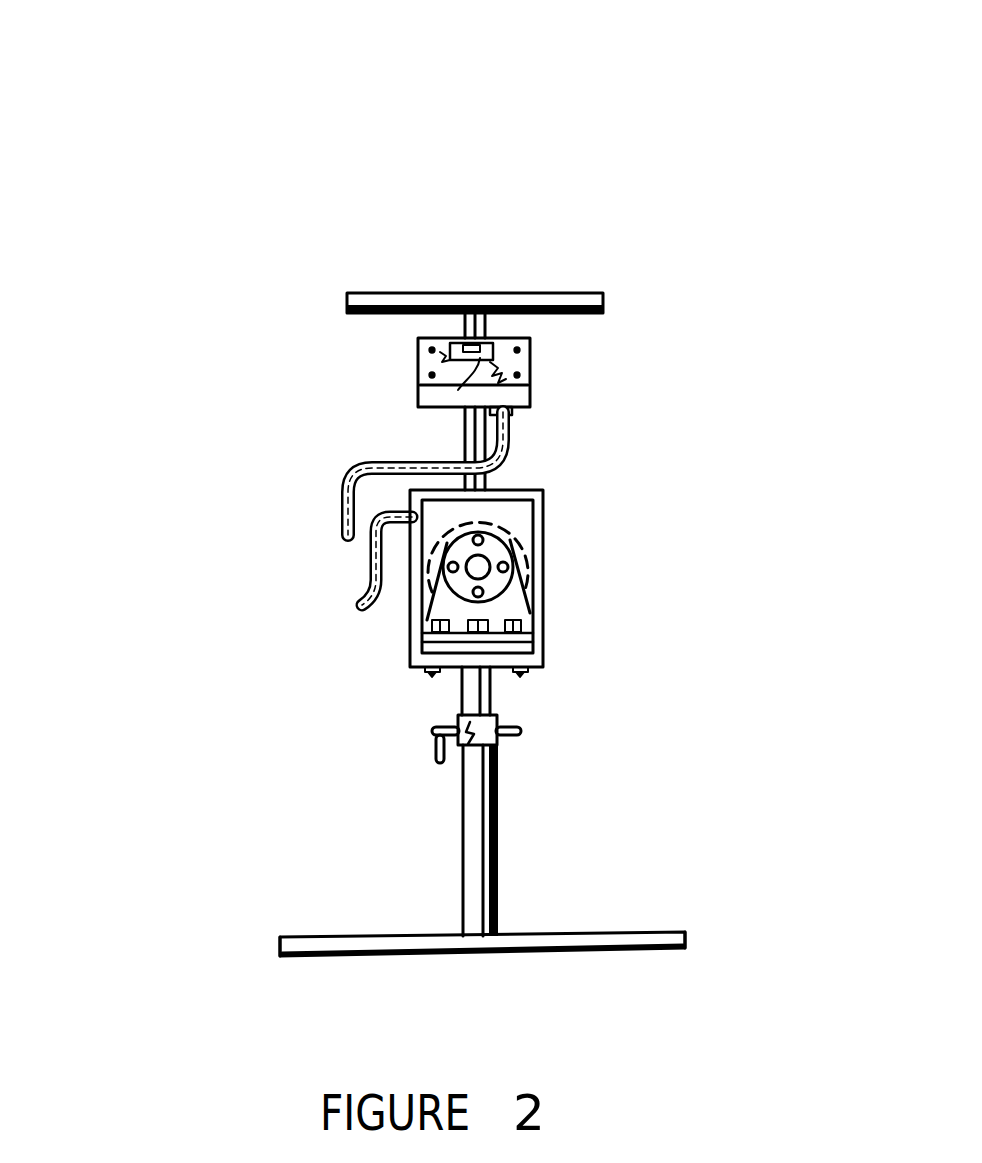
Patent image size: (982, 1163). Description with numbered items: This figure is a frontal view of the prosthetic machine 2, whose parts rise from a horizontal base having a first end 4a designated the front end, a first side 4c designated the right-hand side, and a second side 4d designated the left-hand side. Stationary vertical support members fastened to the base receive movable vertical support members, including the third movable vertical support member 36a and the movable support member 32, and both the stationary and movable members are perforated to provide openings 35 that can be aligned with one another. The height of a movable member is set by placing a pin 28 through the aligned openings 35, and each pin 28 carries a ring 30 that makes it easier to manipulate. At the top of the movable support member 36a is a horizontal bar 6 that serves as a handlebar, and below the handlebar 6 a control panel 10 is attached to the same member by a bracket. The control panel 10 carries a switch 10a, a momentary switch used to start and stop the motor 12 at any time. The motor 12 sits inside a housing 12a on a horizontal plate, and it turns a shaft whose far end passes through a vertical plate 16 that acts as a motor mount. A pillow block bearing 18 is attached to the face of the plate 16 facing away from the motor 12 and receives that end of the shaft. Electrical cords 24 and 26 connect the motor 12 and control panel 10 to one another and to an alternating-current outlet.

The prosthetic machine 2 is at (683, 98).
The first end 4a is at (573, 943).
The first side 4c is at (685, 937).
The second side 4d is at (280, 946).
The horizontal bar 6 is at (370, 293).
The control panel 10 is at (618, 351).
The switch 10a is at (455, 407).
The third movable vertical support member 36a is at (466, 320).
The motor 12 is at (508, 532).
The housing 12a is at (530, 490).
The vertical plate 16 is at (512, 602).
The pillow block bearing 18 is at (497, 555).
The electrical cord 24 is at (342, 487).
The electrical cord 26 is at (362, 578).
The pin 28 is at (521, 731).
The ring 30 is at (438, 752).
The movable support member 32 is at (498, 858).
The openings 35 is at (477, 722).